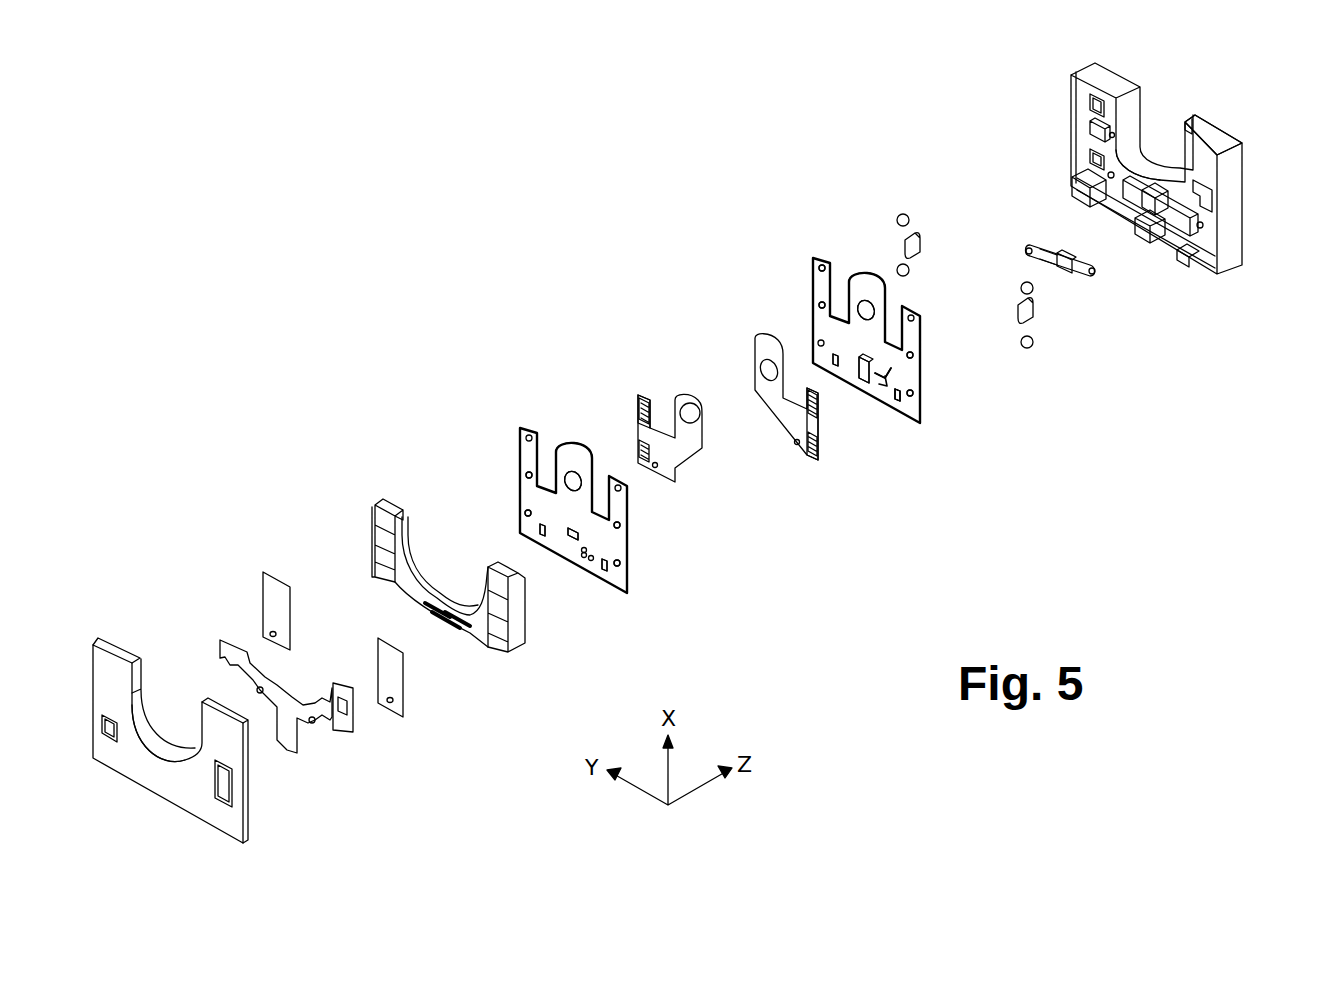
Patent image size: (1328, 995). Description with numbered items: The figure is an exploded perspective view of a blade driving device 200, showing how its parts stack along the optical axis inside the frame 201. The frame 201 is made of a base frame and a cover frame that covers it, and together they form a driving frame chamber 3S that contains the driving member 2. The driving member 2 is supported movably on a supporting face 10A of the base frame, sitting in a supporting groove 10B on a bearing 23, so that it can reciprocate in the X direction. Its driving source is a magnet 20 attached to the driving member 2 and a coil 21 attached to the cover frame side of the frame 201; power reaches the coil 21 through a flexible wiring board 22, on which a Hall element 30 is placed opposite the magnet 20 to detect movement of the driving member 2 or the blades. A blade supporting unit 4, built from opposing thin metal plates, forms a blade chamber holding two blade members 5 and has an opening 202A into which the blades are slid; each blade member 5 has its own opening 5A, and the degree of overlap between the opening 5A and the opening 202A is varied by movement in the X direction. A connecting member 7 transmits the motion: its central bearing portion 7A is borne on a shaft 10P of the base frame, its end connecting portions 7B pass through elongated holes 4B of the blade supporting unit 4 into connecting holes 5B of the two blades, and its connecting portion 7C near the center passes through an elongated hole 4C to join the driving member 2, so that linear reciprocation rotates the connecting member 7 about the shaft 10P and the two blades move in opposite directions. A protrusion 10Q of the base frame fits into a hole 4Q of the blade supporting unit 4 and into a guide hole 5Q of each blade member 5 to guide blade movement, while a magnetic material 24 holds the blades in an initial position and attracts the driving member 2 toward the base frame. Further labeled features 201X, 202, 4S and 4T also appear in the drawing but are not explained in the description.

The blade driving device 200 is at (582, 213).
The frame 201 is at (185, 812).
The notch 201X is at (150, 716).
The coil 21 is at (292, 606).
The wiring board 22 is at (299, 752).
The Hall element 30 is at (356, 714).
The driving member 2 is at (417, 561).
The magnet 20 is at (375, 552).
The blade supporting unit 4 is at (520, 436).
The opening 202 is at (550, 442).
The opening 202A is at (572, 474).
The hole 4Q is at (525, 513).
The elongated hole 4B is at (538, 530).
The elongated hole 4C is at (580, 553).
The frame spring portion 4S is at (889, 400).
The frame tab 4T is at (905, 426).
The blade member 5 is at (672, 466).
The opening 5A is at (689, 396).
The connecting hole 5B is at (645, 466).
The guide hole 5Q is at (640, 404).
The bearing 23 is at (899, 214).
The magnetic material 24 is at (918, 236).
The connecting member 7 is at (1049, 281).
The bearing portion 7A is at (1062, 270).
The connecting portion 7B is at (1025, 250).
The connecting portion 7C is at (1067, 277).
The supporting face 10A is at (1215, 150).
The supporting groove 10B is at (1089, 102).
The protrusion 10Q is at (1089, 131).
The shaft 10P is at (1160, 238).
The driving frame chamber 3S is at (1182, 266).